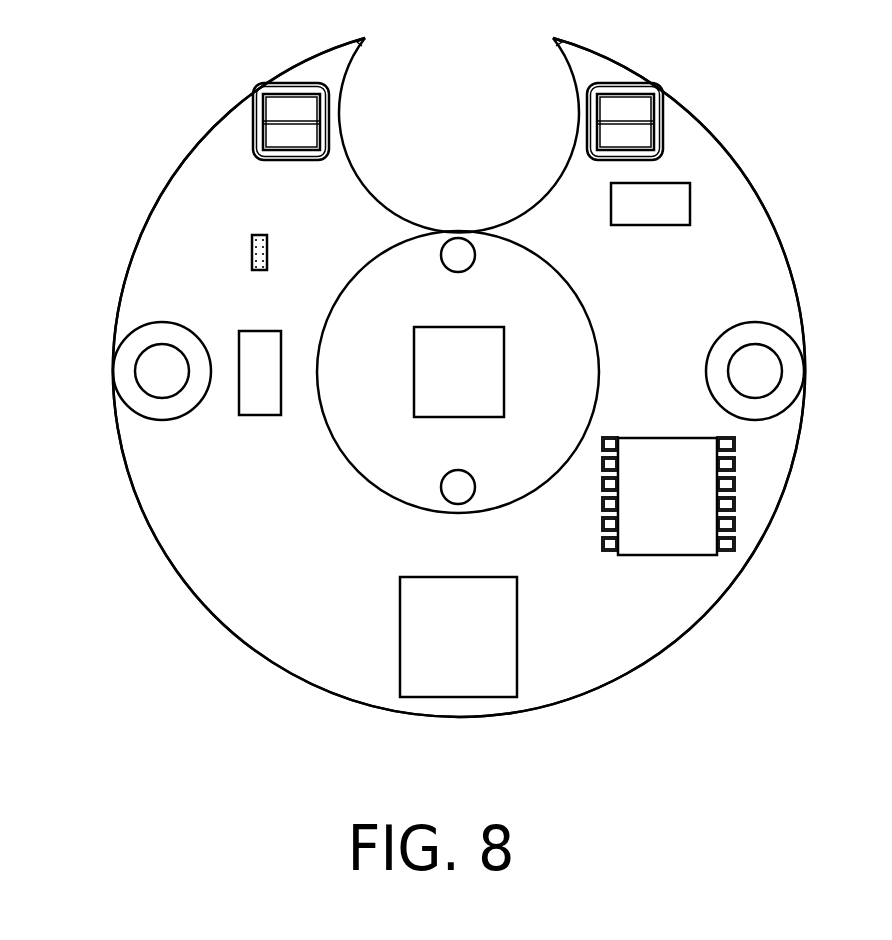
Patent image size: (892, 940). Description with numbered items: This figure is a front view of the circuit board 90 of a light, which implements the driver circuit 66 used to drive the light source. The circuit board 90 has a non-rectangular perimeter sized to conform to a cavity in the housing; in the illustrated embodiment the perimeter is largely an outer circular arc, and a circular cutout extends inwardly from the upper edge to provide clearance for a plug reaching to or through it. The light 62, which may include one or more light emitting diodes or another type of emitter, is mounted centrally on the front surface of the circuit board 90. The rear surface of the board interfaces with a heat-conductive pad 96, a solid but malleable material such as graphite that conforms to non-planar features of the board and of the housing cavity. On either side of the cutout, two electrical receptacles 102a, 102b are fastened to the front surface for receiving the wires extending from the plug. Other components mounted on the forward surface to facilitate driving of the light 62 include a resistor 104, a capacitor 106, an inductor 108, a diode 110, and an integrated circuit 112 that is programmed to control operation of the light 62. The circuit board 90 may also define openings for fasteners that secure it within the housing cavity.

The driver circuit 66 is at (125, 97).
The circuit board 90 is at (163, 230).
The heat-conductive pad 96 is at (346, 48).
The light 62 is at (504, 373).
The electrical receptacle 102a is at (293, 105).
The electrical receptacle 102b is at (630, 107).
The resistor 104 is at (663, 195).
The capacitor 106 is at (268, 250).
The inductor 108 is at (479, 649).
The diode 110 is at (257, 389).
The integrated circuit 112 is at (684, 505).